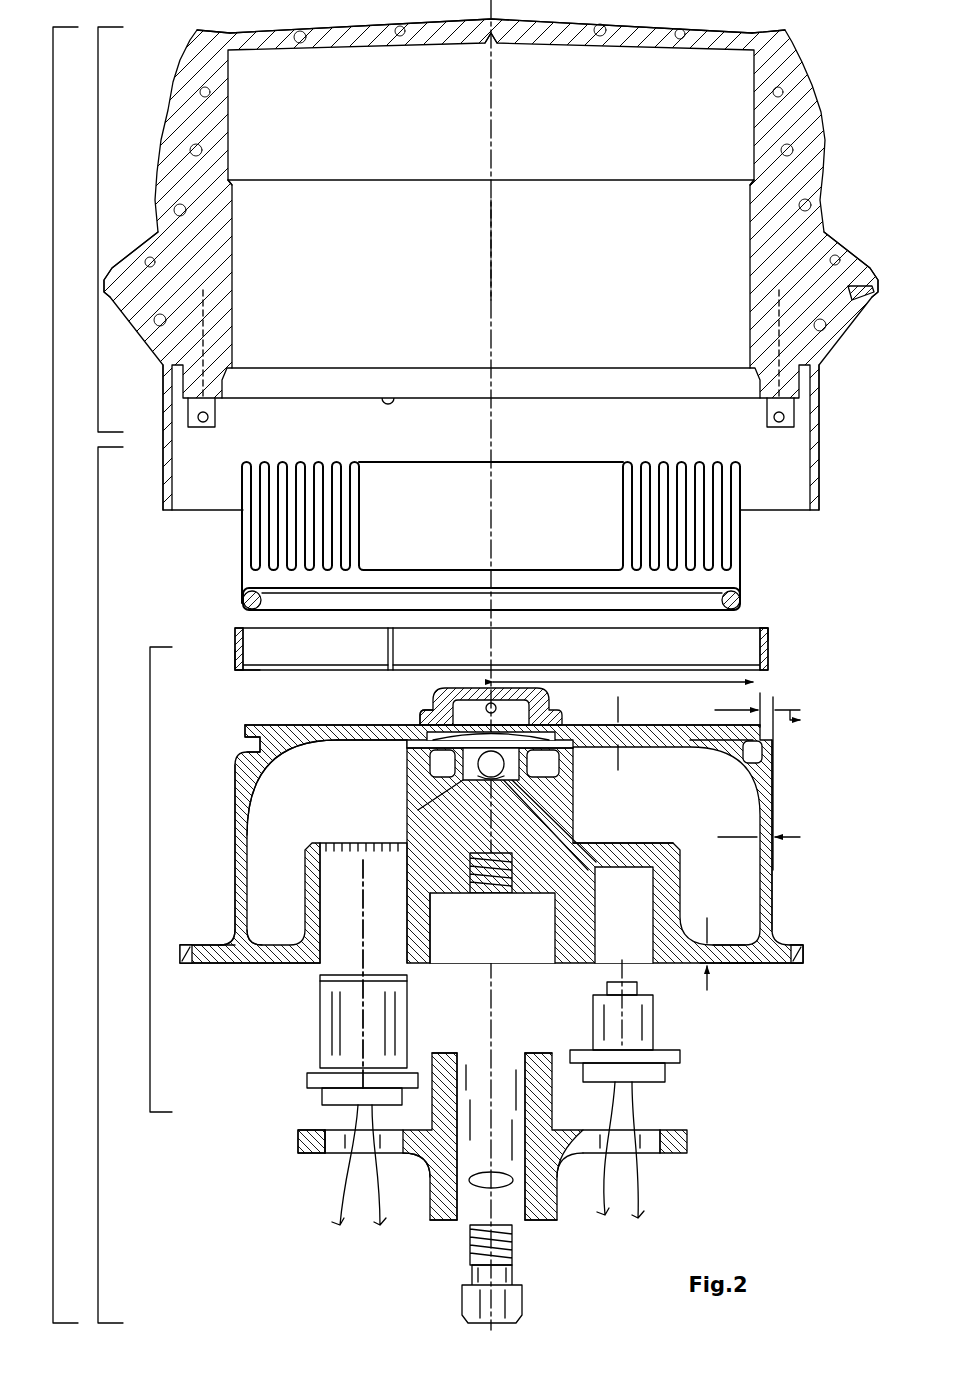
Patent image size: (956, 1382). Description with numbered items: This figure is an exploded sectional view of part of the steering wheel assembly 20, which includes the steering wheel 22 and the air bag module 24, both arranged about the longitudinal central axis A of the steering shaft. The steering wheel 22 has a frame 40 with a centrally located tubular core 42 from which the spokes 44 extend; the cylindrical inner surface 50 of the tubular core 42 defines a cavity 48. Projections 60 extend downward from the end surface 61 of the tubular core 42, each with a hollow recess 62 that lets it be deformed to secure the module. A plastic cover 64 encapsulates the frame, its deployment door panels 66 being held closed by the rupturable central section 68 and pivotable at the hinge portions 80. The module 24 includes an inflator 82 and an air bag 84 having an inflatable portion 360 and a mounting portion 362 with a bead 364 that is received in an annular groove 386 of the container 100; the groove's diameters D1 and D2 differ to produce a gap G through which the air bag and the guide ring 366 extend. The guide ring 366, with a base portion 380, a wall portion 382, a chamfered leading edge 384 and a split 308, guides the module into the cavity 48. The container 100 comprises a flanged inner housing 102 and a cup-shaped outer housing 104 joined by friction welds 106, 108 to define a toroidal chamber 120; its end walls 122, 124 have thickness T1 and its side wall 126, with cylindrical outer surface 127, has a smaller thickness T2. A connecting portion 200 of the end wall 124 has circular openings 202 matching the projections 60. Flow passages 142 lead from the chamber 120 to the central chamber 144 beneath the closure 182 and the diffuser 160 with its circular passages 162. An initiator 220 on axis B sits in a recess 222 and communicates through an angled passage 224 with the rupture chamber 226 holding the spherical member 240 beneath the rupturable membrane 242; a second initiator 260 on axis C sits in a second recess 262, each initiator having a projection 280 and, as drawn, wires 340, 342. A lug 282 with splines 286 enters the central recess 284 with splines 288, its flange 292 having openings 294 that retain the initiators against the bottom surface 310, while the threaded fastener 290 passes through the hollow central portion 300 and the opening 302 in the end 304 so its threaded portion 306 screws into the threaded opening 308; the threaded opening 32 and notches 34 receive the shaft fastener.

The steering wheel assembly 20 is at (53, 633).
The steering wheel 22 is at (98, 222).
The air bag module 24 is at (98, 818).
The inflator 82 is at (150, 875).
The plastic cover 64 is at (822, 83).
The hinge portions 80 is at (233, 33).
The deployment door panels 66 is at (420, 25).
The rupturable central section 68 is at (485, 43).
The spokes 44 is at (158, 248).
The frame 40 is at (806, 322).
The tubular core 42 is at (766, 345).
The cylindrical inner surface 50 is at (235, 283).
The cavity 48 is at (296, 326).
The longitudinal central axis A is at (498, 250).
The end surface 61 is at (392, 398).
The projections 60 is at (214, 408).
The hollow recess 62 is at (205, 428).
The air bag 84 is at (747, 556).
The inflatable portion 360 is at (364, 512).
The mounting portion 362 is at (242, 604).
The bead 364 is at (246, 596).
The guide ring 366 is at (234, 650).
The base portion 380 is at (243, 670).
The wall portion 382 is at (770, 648).
The chamfered leading edge 384 is at (768, 628).
The threaded opening 308 is at (388, 645).
The diameter D1 is at (640, 682).
The diameter D2 is at (645, 730).
The gap G is at (762, 702).
The first thickness T1 is at (654, 842).
The second thickness T2 is at (764, 837).
The container 100 is at (763, 940).
The end wall 122 is at (345, 722).
The annular groove 386 is at (262, 752).
The outer housing 104 is at (236, 812).
The chamber 120 is at (268, 812).
The friction weld 106 is at (232, 940).
The inner housing 102 is at (292, 968).
The circular openings 202 is at (195, 962).
The connecting portion 200 is at (805, 955).
The end wall 124 is at (722, 963).
The side wall 126 is at (772, 812).
The cylindrical outer surface 127 is at (760, 790).
The passage 224 is at (548, 828).
The second recess 262 is at (400, 950).
The splines 288 is at (553, 895).
The bottom surface 310 is at (648, 968).
The central recess 284 is at (557, 948).
The recess 222 is at (604, 963).
The central chamber 144 is at (437, 735).
The friction weld 108 is at (407, 745).
The flow passages 142 is at (408, 770).
The spherical member 240 is at (507, 770).
The rupture chamber 226 is at (487, 773).
The diffuser 160 is at (478, 688).
The circular passages 162 is at (433, 718).
The rupturable membrane 242 is at (545, 736).
The closure 182 is at (475, 735).
The second initiator 260 is at (319, 1043).
The longitudinal central axis C is at (363, 990).
The projection 280 is at (308, 1080).
The connector wires 342 is at (375, 1210).
The initiator 220 is at (656, 1038).
The longitudinal central axis B is at (622, 1003).
The connector wires 340 is at (635, 1192).
The splines 286 is at (552, 1092).
The lug 282 is at (690, 1142).
The opening 302 is at (491, 1136).
The end 304 is at (466, 1060).
The notches 34 is at (515, 1180).
The hollow central portion 300 is at (460, 1218).
The threaded opening 32 is at (428, 1180).
The flange 292 is at (310, 1140).
The openings 294 is at (328, 1152).
The threaded fastener 290 is at (517, 1277).
The threaded portion 306 is at (516, 1243).